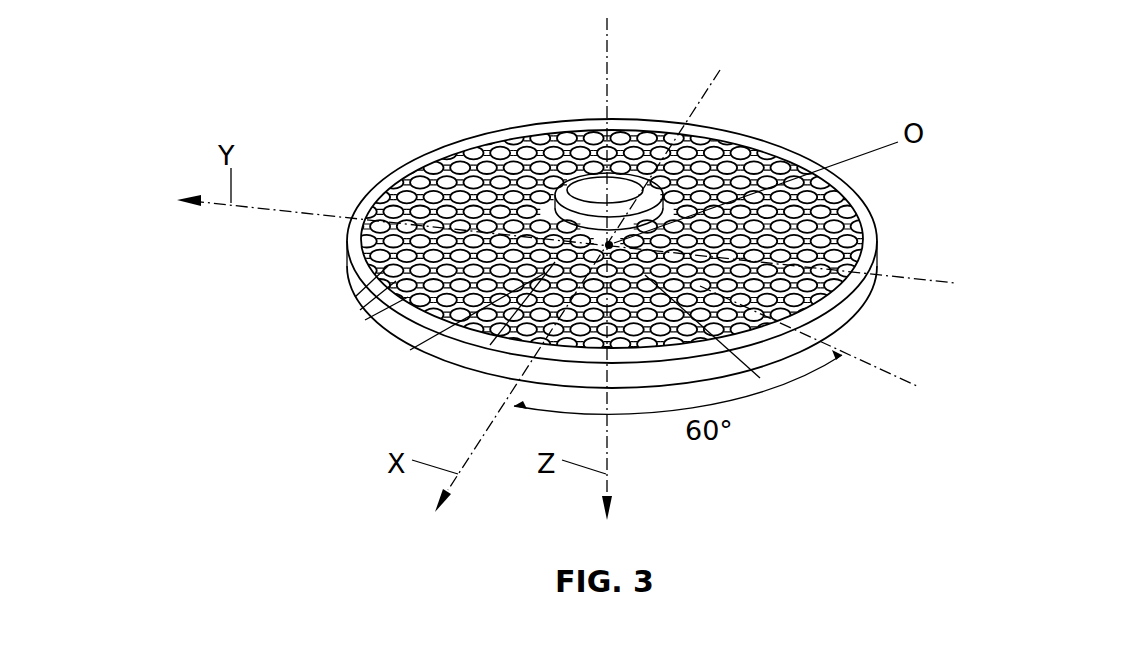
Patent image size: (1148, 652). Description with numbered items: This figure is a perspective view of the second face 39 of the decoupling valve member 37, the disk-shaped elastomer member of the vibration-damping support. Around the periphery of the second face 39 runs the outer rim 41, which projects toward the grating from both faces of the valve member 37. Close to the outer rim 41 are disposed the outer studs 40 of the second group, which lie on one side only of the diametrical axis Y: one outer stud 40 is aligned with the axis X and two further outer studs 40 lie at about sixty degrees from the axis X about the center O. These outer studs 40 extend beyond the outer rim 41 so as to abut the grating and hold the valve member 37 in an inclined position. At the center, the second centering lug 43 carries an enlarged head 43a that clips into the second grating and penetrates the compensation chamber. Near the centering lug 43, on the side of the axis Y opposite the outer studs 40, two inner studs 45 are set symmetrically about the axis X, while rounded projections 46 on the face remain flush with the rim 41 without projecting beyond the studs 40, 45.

The decoupling valve member 37 is at (460, 128).
The second face 39 is at (752, 147).
The outer studs 40 is at (440, 155).
The outer rim 41 is at (818, 308).
The second centering lug 43 is at (490, 345).
The enlarged head 43a is at (578, 190).
The inner studs 45 is at (410, 350).
The rounded projections 46 is at (355, 297).